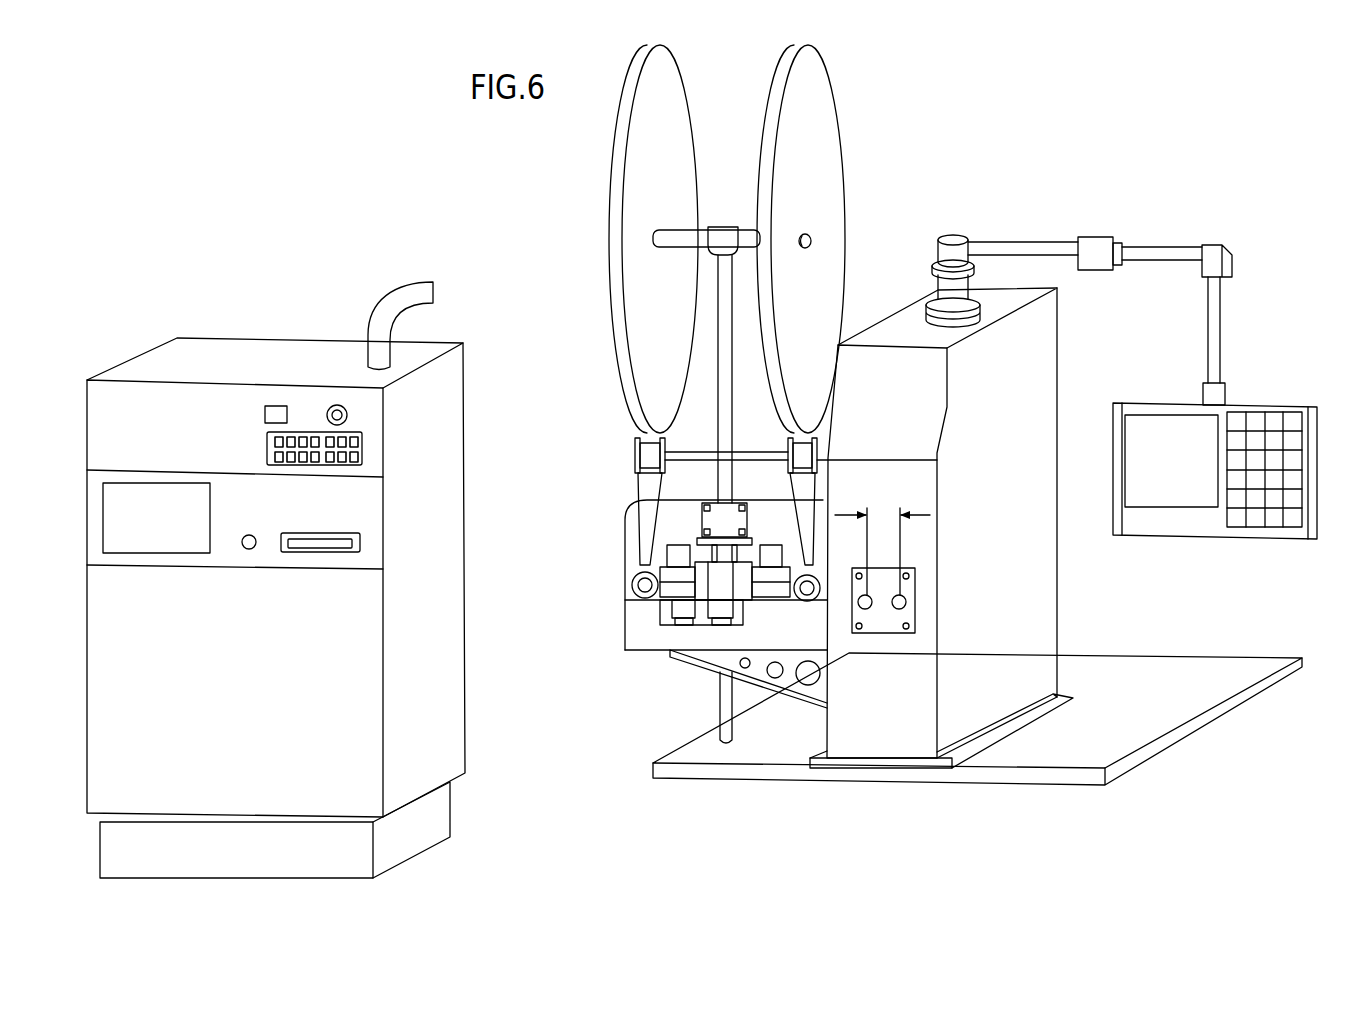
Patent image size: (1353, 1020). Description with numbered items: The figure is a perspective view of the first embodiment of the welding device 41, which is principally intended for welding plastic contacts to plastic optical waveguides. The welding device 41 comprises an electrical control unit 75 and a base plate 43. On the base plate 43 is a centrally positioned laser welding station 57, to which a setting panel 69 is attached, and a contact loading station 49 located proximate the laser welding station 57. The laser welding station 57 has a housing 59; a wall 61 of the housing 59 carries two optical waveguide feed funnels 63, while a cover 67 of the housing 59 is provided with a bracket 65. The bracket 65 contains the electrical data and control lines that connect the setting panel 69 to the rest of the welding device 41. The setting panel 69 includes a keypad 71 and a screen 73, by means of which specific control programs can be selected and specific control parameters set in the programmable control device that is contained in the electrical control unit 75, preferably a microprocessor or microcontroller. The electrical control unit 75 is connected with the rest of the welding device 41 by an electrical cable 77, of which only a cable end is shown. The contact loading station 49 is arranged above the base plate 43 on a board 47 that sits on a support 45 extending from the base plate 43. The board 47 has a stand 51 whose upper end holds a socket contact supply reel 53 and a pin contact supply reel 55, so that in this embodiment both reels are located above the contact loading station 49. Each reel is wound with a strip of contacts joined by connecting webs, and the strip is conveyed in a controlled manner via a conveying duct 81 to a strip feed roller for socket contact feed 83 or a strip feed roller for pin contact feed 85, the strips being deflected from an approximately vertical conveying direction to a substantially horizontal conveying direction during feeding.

The welding device 41 is at (540, 280).
The base plate 43 is at (1240, 682).
The support 45 is at (710, 660).
The board 47 is at (637, 618).
The contact loading station 49 is at (680, 630).
The stand 51 is at (722, 428).
The socket contact supply reel 53 is at (661, 99).
The pin contact supply reel 55 is at (813, 100).
The laser welding station 57 is at (1022, 583).
The housing 59 is at (1037, 367).
The wall 61 is at (902, 748).
The optical waveguide feed funnels 63 is at (897, 605).
The bracket 65 is at (1173, 247).
The cover 67 is at (897, 327).
The setting panel 69 is at (1231, 481).
The keypad 71 is at (1292, 422).
The screen 73 is at (1187, 485).
The electrical control unit 75 is at (253, 705).
The electrical cable 77 is at (413, 290).
The conveying duct 81 is at (806, 497).
The strip feed roller for socket contact feed 83 is at (632, 583).
The strip feed roller for pin contact feed 85 is at (812, 600).